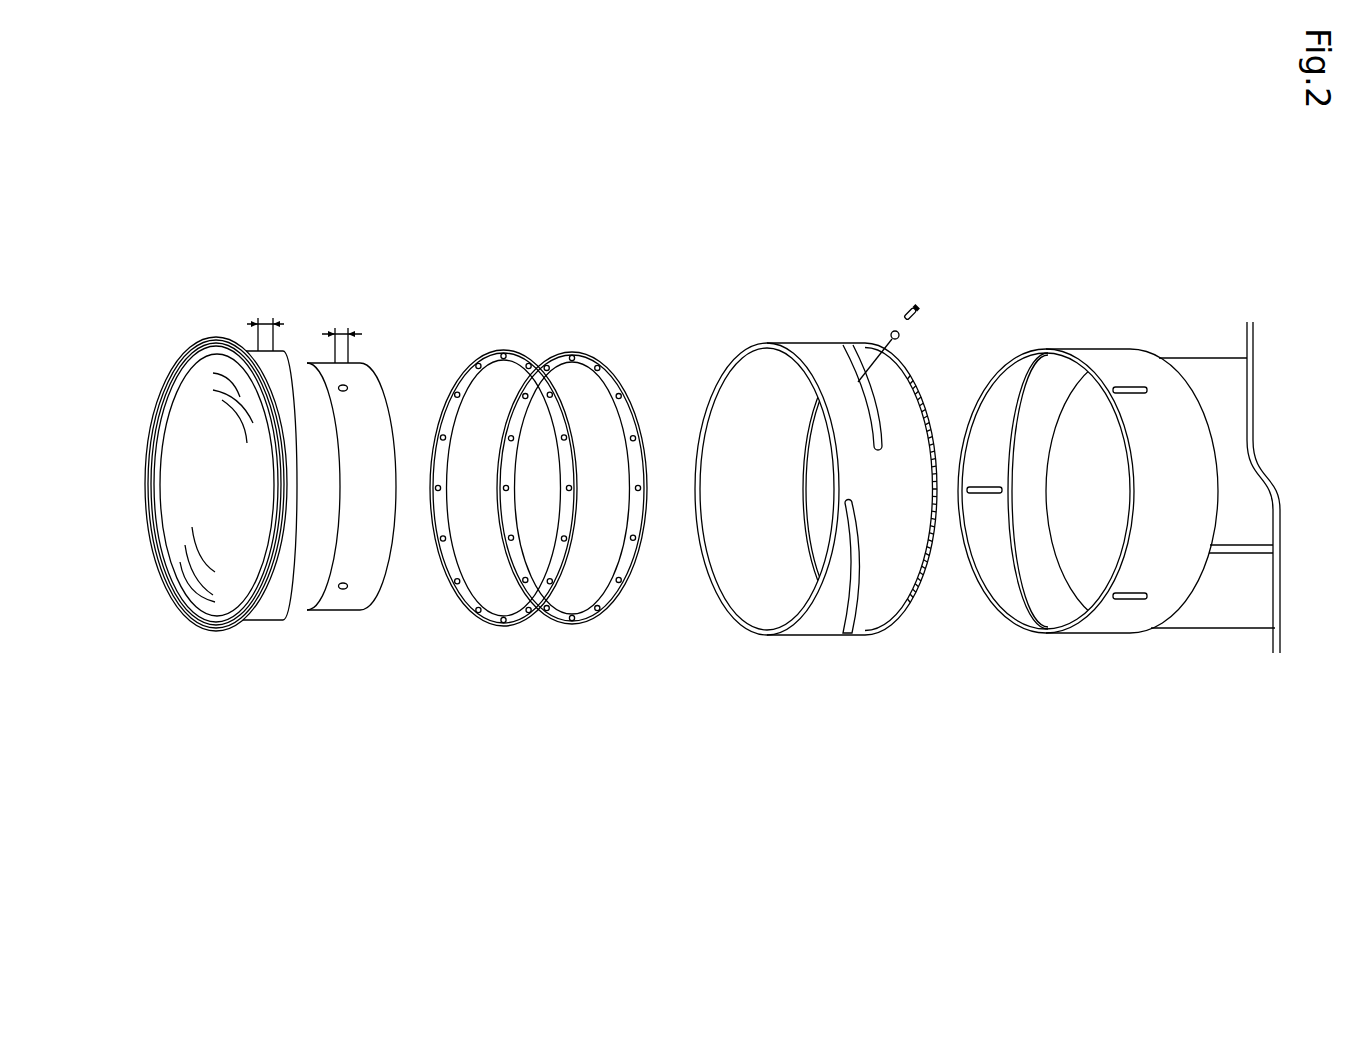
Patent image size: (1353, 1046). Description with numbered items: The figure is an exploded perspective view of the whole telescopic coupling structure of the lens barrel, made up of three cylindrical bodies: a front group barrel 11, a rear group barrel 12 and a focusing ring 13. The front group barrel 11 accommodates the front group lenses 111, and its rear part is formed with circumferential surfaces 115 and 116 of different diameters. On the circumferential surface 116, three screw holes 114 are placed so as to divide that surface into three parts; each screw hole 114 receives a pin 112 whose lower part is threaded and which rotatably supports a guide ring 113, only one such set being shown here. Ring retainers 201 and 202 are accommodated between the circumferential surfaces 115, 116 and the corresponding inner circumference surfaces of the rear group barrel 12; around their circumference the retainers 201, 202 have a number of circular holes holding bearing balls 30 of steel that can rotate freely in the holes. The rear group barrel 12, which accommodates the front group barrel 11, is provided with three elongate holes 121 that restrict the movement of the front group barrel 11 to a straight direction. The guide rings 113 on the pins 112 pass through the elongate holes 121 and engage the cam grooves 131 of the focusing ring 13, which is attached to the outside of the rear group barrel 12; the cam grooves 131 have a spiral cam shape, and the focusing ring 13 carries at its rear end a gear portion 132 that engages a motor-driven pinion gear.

The front group barrel 11 is at (249, 252).
The front group lenses 111 is at (195, 375).
The screw holes 114 is at (345, 393).
The circumferential surface 115 is at (263, 622).
The circumferential surface 116 is at (322, 613).
The ring retainer 201 is at (493, 349).
The ring retainer 202 is at (577, 352).
The bearing balls 30 is at (453, 378).
The focusing ring 13 is at (797, 295).
The cam grooves 131 is at (843, 375).
The gear portion 132 is at (932, 440).
The pins 112 is at (917, 303).
The guide rings 113 is at (894, 330).
The rear group barrel 12 is at (1032, 337).
The elongate holes 121 is at (1123, 386).